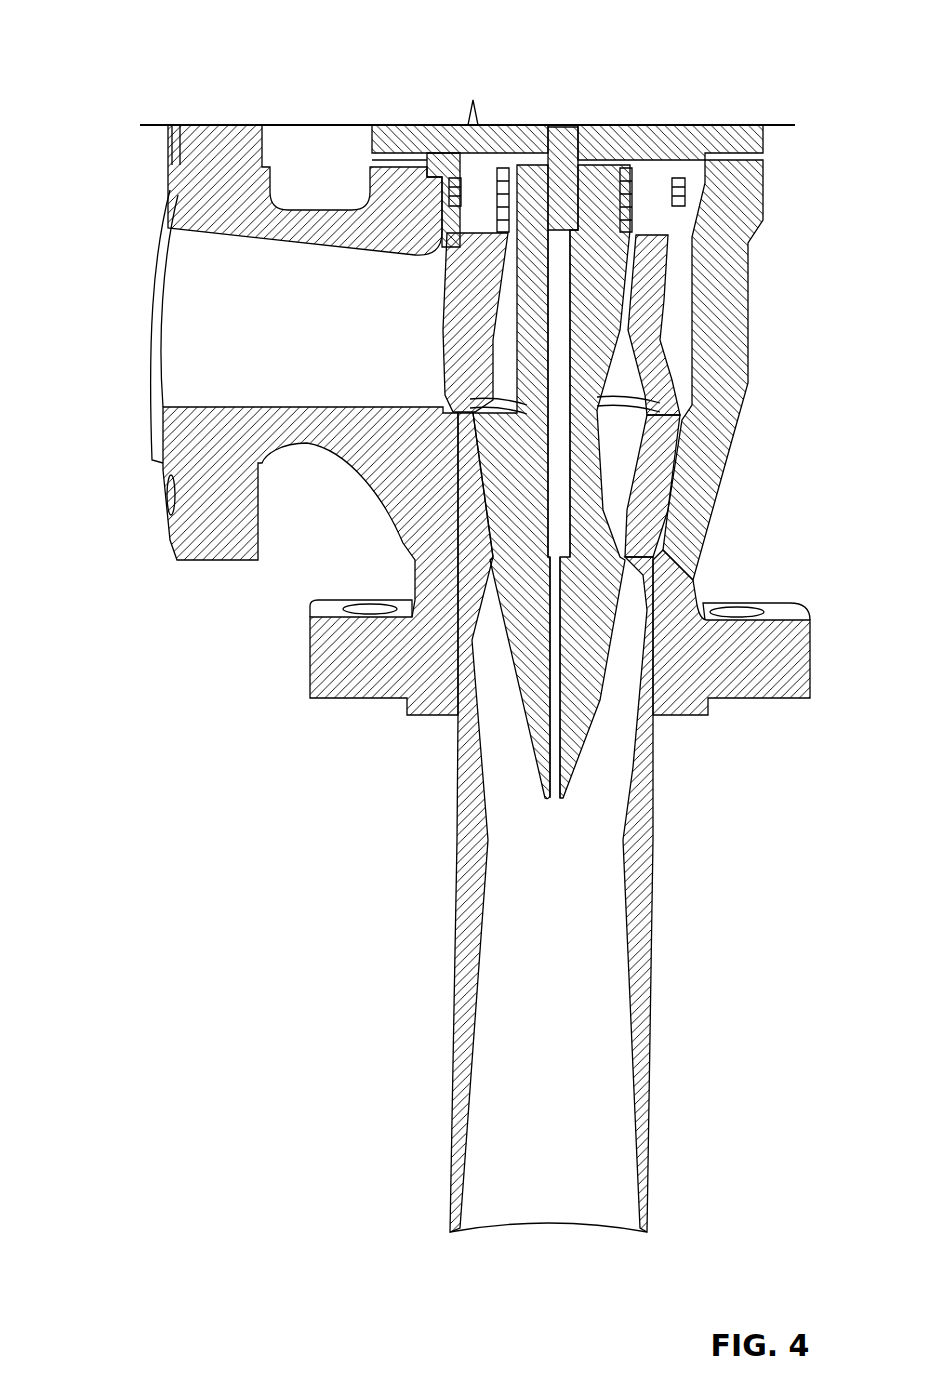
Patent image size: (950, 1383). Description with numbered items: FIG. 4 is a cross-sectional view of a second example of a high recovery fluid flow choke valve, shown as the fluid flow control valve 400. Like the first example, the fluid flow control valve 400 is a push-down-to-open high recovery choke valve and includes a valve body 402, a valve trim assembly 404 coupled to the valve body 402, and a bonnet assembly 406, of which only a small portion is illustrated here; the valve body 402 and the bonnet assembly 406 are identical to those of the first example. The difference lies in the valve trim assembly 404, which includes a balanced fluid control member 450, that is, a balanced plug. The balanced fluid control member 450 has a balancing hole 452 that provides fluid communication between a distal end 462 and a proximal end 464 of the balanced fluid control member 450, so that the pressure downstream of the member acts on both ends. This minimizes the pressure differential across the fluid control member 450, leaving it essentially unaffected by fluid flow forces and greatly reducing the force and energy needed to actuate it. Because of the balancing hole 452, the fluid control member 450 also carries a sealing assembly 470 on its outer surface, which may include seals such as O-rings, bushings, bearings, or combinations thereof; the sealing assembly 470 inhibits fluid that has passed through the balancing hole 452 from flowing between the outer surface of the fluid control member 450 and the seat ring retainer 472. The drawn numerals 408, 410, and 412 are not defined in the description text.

The fluid flow control valve 400 is at (140, 44).
The valve body 402 is at (222, 137).
The valve trim assembly 404 is at (438, 305).
The bonnet assembly 406 is at (447, 135).
The inlet 408 is at (136, 353).
The outlet 410 is at (443, 735).
The inlet chamber 412 is at (218, 270).
The balanced fluid control member 450 is at (597, 556).
The balancing hole 452 is at (555, 740).
The distal end 462 is at (612, 797).
The proximal end 464 is at (610, 142).
The sealing assembly 470 is at (486, 207).
The seat ring retainer 472 is at (700, 408).